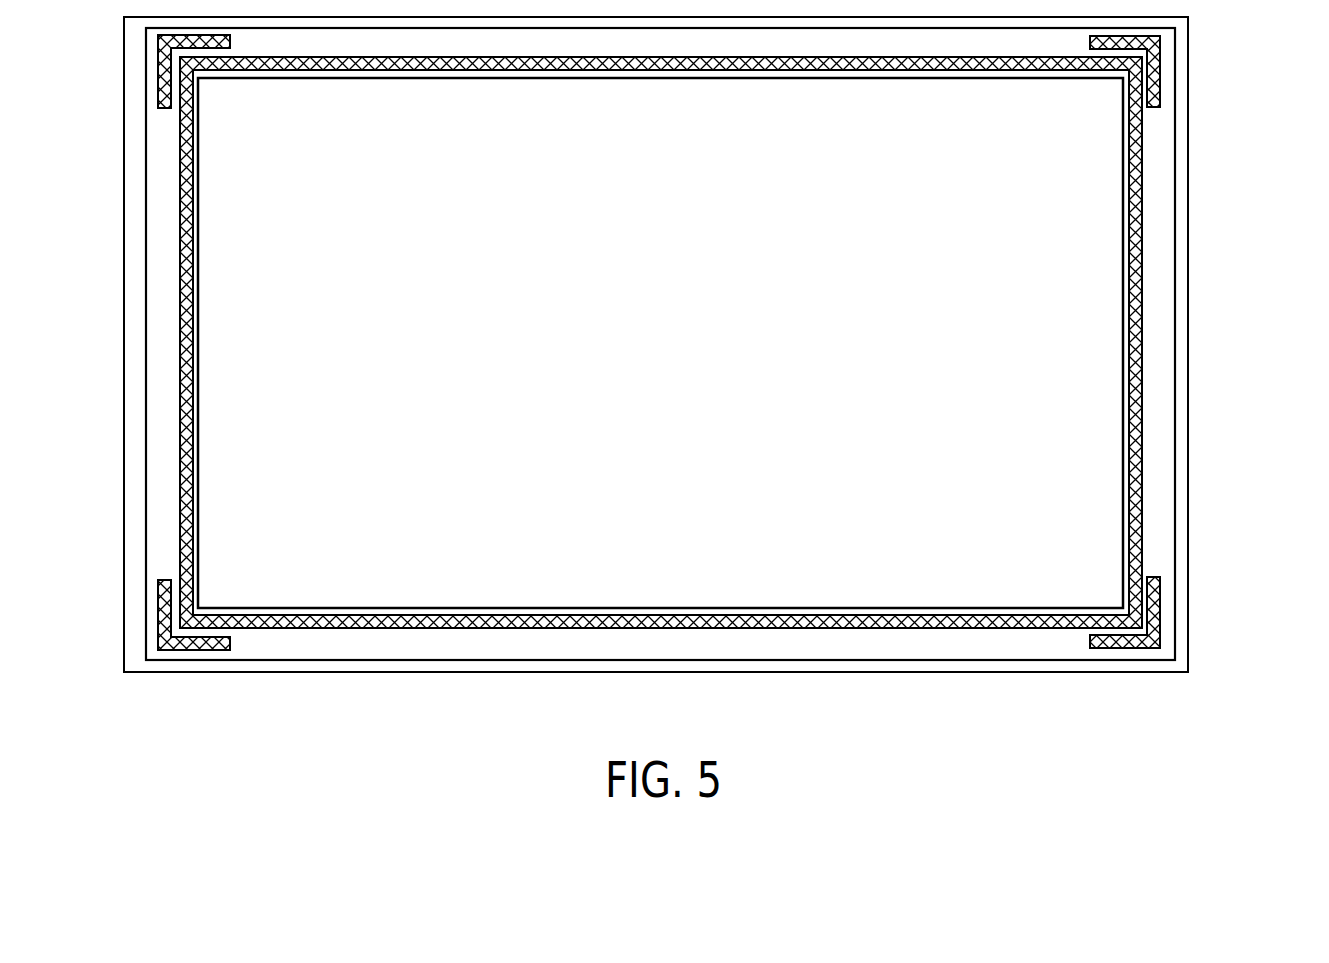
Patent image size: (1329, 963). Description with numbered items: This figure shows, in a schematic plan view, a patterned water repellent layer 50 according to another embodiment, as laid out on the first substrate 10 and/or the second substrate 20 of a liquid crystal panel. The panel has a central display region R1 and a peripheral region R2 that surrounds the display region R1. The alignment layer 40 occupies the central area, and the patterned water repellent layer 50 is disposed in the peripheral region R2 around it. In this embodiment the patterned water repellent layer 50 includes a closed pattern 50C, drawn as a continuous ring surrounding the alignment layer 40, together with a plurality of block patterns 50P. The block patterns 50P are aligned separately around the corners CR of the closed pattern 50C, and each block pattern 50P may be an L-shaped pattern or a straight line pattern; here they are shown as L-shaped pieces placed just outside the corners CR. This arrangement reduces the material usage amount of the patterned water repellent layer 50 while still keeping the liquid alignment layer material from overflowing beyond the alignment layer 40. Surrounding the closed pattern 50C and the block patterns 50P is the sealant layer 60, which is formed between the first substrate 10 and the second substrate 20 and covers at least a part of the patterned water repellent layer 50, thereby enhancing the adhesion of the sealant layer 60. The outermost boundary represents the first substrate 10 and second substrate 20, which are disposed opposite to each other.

The first substrate 10 is at (1190, 343).
The second substrate 20 is at (1190, 343).
The alignment layer 40 is at (922, 557).
The patterned water repellent layer 50 is at (738, 342).
The closed pattern 50C is at (1140, 210).
The block patterns 50P is at (1157, 93).
The sealant layer 60 is at (1168, 265).
The corners CR is at (1140, 60).
The display region R1 is at (502, 610).
The peripheral region R2 is at (393, 668).